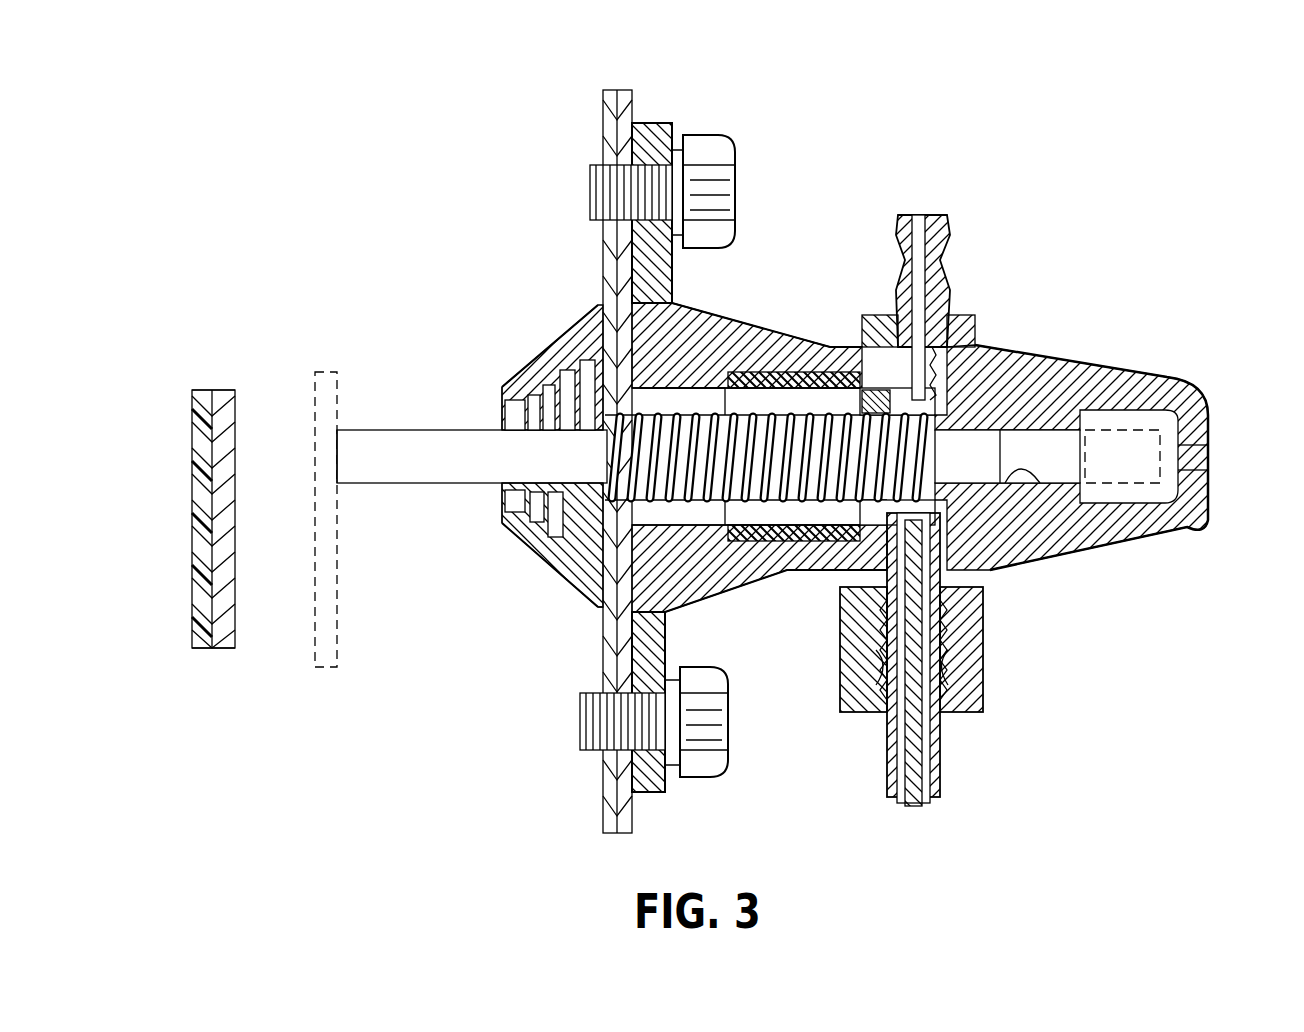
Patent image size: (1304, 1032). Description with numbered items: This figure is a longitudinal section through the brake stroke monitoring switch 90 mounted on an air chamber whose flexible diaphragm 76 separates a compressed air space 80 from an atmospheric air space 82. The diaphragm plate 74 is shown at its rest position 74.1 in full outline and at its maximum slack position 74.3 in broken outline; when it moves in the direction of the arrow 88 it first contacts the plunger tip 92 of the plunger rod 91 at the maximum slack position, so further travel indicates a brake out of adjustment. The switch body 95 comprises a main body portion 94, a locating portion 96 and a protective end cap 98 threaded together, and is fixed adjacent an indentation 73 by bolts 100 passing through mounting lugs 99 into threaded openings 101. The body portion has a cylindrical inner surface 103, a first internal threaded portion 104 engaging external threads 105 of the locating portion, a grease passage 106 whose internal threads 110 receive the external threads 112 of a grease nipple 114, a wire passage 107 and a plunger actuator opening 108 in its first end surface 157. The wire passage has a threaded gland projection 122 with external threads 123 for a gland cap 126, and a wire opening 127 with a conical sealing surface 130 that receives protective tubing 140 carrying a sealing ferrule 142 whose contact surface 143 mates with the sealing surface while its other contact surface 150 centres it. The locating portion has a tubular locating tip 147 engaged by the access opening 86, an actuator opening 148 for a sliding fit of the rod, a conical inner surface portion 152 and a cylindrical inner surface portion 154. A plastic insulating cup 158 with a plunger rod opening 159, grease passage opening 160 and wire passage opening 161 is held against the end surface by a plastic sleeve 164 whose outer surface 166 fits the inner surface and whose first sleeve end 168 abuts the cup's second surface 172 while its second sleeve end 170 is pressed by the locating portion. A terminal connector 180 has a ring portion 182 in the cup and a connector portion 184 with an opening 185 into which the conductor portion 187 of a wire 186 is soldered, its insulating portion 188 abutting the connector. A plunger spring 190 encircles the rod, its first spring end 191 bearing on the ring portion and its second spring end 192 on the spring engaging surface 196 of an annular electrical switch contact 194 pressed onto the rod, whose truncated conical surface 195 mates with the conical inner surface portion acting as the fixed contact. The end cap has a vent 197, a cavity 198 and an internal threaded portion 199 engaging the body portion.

The indentation 73 is at (518, 393).
The diaphragm plate 74 is at (222, 387).
The rest position 74.1 is at (232, 645).
The maximum slack position 74.3 is at (337, 645).
The flexible diaphragm 76 is at (205, 387).
The compressed air space 80 is at (177, 519).
The atmospheric air space 82 is at (443, 460).
The access opening 86 is at (498, 416).
The arrow 88 is at (375, 766).
The brake stroke monitoring switch 90 is at (1100, 118).
The plunger rod 91 is at (405, 432).
The plunger tip 92 is at (335, 456).
The main body portion 94 is at (882, 190).
The switch body 95 is at (912, 122).
The locating portion 96 is at (530, 528).
The protective end cap 98 is at (1162, 263).
The mounting lugs 99 is at (648, 135).
The bolts 100 is at (735, 158).
The threaded openings 101 is at (600, 178).
The cylindrical inner surface 103 is at (826, 372).
The first internal threaded portion 104 is at (595, 603).
The external threads 105 is at (578, 560).
The grease passage 106 is at (950, 335).
The wire passage 107 is at (800, 548).
The plunger actuator opening 108 is at (1105, 545).
The internal threads 110 is at (870, 355).
The external threads 112 is at (898, 330).
The grease nipple 114 is at (950, 228).
The threaded gland projection 122 is at (852, 625).
The external threads 123 is at (985, 662).
The gland cap 126 is at (983, 700).
The wire opening 127 is at (948, 728).
The sealing surface 130 is at (878, 708).
The protective tubing 140 is at (885, 772).
The sealing ferrule 142 is at (865, 690).
The contact surface 143 is at (870, 668).
The tubular locating tip 147 is at (505, 515).
The actuator opening 148 is at (498, 492).
The contact surface 150 is at (955, 715).
The conical inner surface portion 152 is at (605, 348).
The cylindrical inner surface portion 154 is at (683, 345).
The first end surface 157 is at (940, 420).
The insulating cup 158 is at (944, 380).
The plunger rod opening 159 is at (1015, 362).
The grease passage opening 160 is at (958, 310).
The wire passage opening 161 is at (905, 520).
The plastic sleeve 164 is at (730, 598).
The outer surface 166 is at (762, 370).
The first sleeve end 168 is at (858, 372).
The second sleeve end 170 is at (722, 370).
The second surface 172 is at (858, 397).
The terminal connector 180 is at (955, 585).
The ring portion 182 is at (945, 565).
The connector portion 184 is at (965, 612).
The opening 185 is at (880, 612).
The wire 186 is at (920, 818).
The conductor portion 187 is at (905, 812).
The insulating portion 188 is at (930, 802).
The plunger spring 190 is at (705, 502).
The first spring end 191 is at (940, 465).
The second spring end 192 is at (583, 365).
The annular electrical switch contact 194 is at (565, 378).
The truncated conical surface 195 is at (545, 383).
The spring engaging surface 196 is at (560, 520).
The vent 197 is at (1196, 458).
The cavity 198 is at (1195, 528).
The internal threaded portion 199 is at (1130, 410).